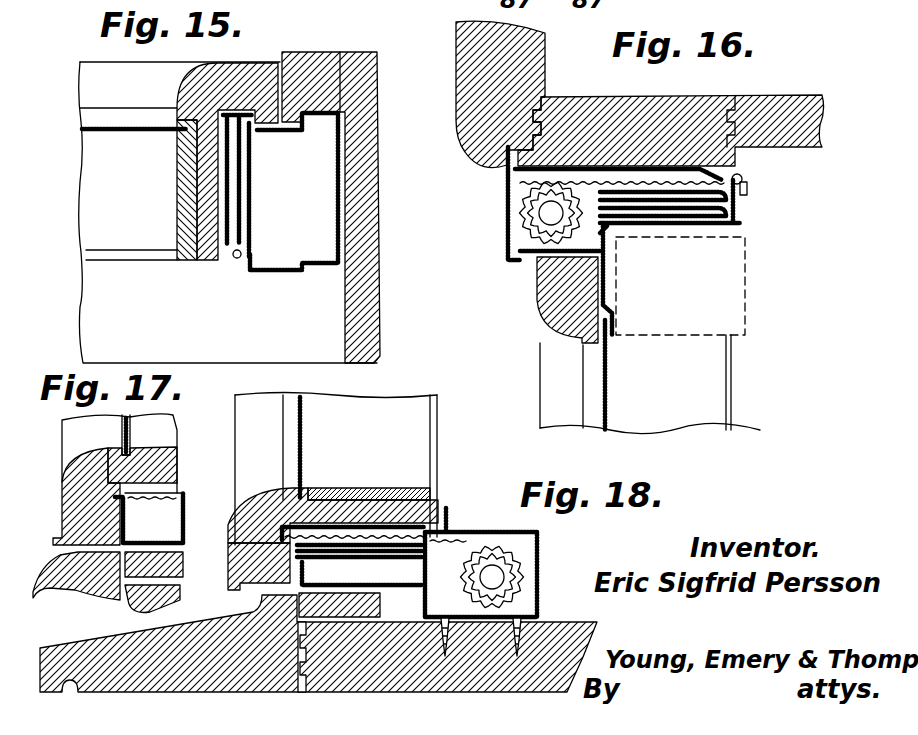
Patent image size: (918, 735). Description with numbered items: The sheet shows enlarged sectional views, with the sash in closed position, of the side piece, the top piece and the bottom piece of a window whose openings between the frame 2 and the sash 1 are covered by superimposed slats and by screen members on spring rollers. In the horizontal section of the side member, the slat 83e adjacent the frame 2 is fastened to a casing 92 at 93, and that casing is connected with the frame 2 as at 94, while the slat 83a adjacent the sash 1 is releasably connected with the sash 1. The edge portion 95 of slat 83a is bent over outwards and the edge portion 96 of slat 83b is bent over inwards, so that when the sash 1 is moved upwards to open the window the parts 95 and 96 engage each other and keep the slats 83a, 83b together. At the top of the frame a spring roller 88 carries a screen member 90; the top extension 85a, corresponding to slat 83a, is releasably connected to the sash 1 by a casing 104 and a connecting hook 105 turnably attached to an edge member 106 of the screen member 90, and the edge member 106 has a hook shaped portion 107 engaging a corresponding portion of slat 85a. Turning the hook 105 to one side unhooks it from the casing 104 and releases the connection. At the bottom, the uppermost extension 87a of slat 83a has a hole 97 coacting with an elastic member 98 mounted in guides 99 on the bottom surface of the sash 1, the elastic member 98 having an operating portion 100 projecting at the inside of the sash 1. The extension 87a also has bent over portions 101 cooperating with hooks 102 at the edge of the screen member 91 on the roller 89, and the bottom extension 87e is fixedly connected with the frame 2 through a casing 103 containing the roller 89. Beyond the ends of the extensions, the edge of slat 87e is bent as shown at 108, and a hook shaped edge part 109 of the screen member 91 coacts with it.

In FIG. 15, the sash 1 is at (206, 248).
In FIG. 16, the sash 1 is at (548, 308).
In FIG. 17, the sash 1 is at (82, 464).
In FIG. 18, the sash 1 is at (338, 505).
In FIG. 15, the frame 2 is at (376, 197).
In FIG. 16, the frame 2 is at (470, 118).
In FIG. 17, the frame 2 is at (76, 585).
In FIG. 18, the frame 2 is at (385, 640).
In FIG. 15, the slat adjacent the sash 83a is at (180, 170).
In FIG. 15, the slat 83b is at (232, 194).
In FIG. 15, the slat adjacent the frame 83e is at (250, 160).
In FIG. 16, the top extension 85a is at (625, 193).
In FIG. 18, the uppermost extension 87a is at (385, 490).
In FIG. 17, the bottom extension 87e is at (153, 520).
In FIG. 18, the bottom extension 87e is at (417, 583).
In FIG. 16, the spring roller 88 is at (545, 223).
In FIG. 18, the spring roller 89 is at (500, 577).
In FIG. 16, the screen member 90 is at (670, 177).
In FIG. 17, the screen member 91 is at (166, 492).
In FIG. 18, the screen member 91 is at (470, 541).
In FIG. 15, the casing 92 is at (326, 266).
In FIG. 15, the fastening point 93 is at (258, 272).
In FIG. 15, the connection point 94 is at (333, 94).
In FIG. 15, the edge portion 95 is at (236, 264).
In FIG. 15, the edge portion 96 is at (228, 165).
In FIG. 18, the hole 97 is at (247, 520).
In FIG. 18, the elastic member 98 is at (317, 502).
In FIG. 18, the guides 99 is at (236, 505).
In FIG. 18, the operating portion 100 is at (446, 500).
In FIG. 18, the bent over portions 101 is at (250, 532).
In FIG. 18, the hooks 102 is at (240, 583).
In FIG. 18, the casing 103 is at (538, 601).
In FIG. 16, the casing 104 is at (692, 226).
In FIG. 16, the connecting hook 105 is at (746, 177).
In FIG. 16, the edge member 106 is at (745, 209).
In FIG. 16, the hook shaped portion 107 is at (735, 230).
In FIG. 17, the bent edge portion 108 is at (151, 518).
In FIG. 17, the hook shaped edge part 109 is at (62, 490).